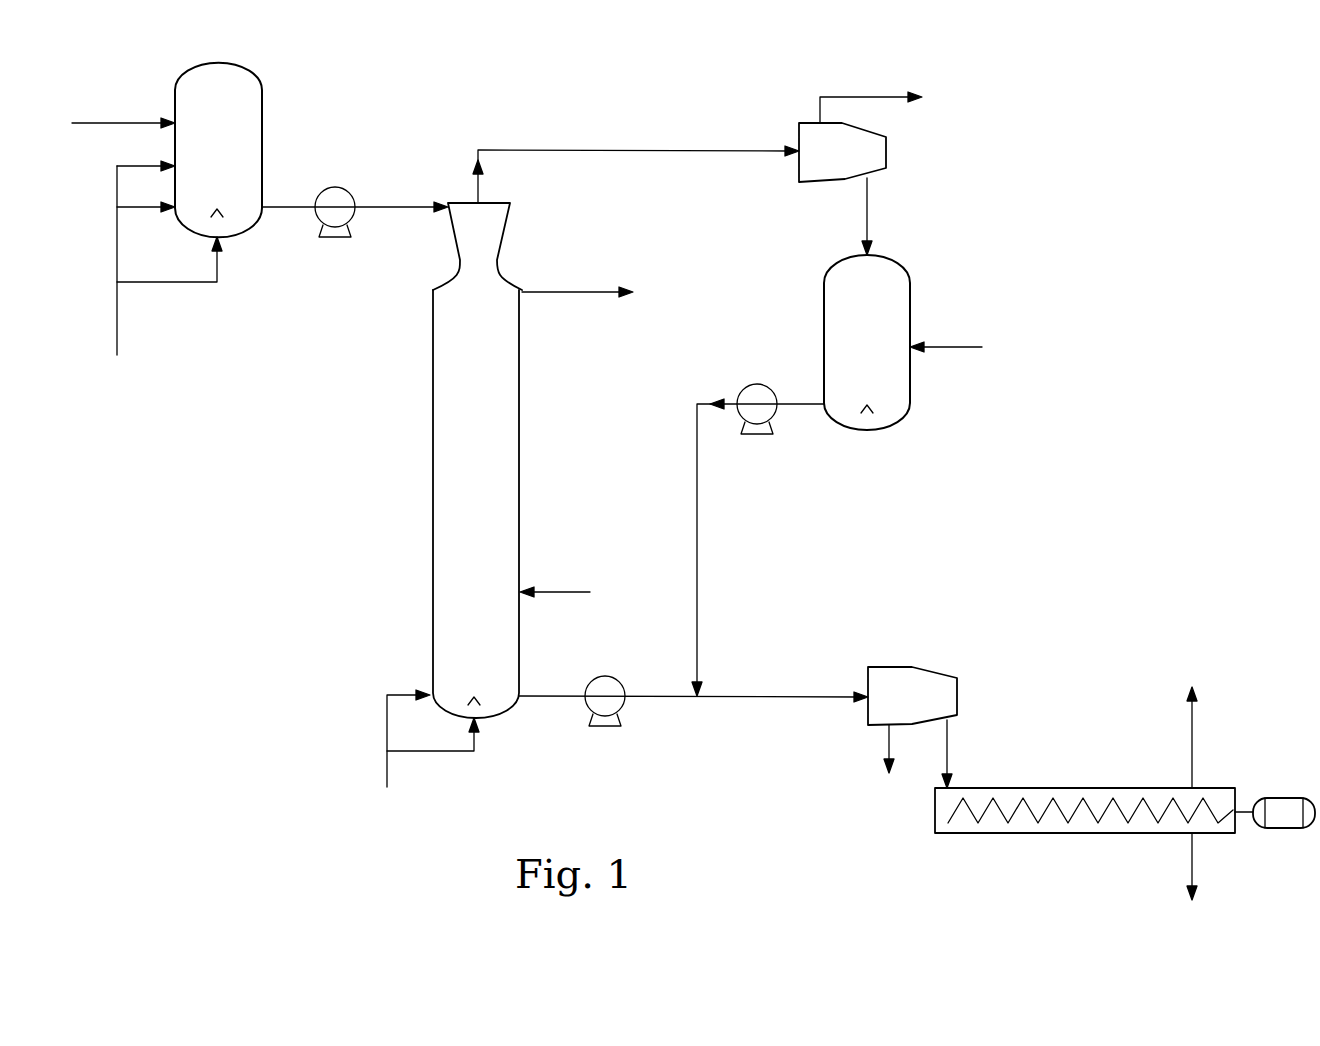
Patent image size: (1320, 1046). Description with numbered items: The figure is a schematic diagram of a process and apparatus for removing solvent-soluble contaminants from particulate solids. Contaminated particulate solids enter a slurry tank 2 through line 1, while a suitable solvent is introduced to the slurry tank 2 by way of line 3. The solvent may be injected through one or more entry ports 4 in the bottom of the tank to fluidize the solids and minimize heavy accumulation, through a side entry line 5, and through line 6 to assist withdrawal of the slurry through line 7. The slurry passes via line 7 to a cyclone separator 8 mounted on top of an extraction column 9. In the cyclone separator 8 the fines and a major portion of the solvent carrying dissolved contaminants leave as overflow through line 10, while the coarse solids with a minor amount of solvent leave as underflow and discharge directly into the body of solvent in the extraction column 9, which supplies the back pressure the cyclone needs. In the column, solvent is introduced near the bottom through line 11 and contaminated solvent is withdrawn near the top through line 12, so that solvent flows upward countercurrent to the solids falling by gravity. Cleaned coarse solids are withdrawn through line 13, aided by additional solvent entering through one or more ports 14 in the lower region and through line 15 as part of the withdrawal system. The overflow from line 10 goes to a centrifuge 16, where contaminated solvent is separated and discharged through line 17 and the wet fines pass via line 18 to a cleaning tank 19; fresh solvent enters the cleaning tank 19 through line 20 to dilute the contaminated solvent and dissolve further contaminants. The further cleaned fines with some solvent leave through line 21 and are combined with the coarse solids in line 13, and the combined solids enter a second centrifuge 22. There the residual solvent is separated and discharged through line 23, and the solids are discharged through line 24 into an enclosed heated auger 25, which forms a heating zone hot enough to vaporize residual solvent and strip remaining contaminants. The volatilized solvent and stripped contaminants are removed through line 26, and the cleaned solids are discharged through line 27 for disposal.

The line 1 is at (128, 122).
The slurry tank 2 is at (262, 108).
The line 3 is at (117, 307).
The entry ports 4 is at (225, 237).
The line 5 is at (133, 166).
The line 6 is at (140, 207).
The line 7 is at (402, 205).
The cyclone separator 8 is at (510, 220).
The extraction column 9 is at (433, 442).
The line 10 is at (553, 150).
The line 11 is at (560, 592).
The line 12 is at (558, 293).
The line 13 is at (658, 697).
The ports 14 is at (475, 720).
The line 15 is at (397, 692).
The centrifuge 16 is at (799, 183).
The line 17 is at (860, 97).
The line 18 is at (867, 202).
The cleaning tank 19 is at (910, 280).
The line 20 is at (952, 347).
The line 21 is at (695, 527).
The centrifuge 22 is at (887, 667).
The line 23 is at (889, 737).
The line 24 is at (947, 747).
The heated auger 25 is at (980, 833).
The line 26 is at (1192, 750).
The line 27 is at (1192, 855).